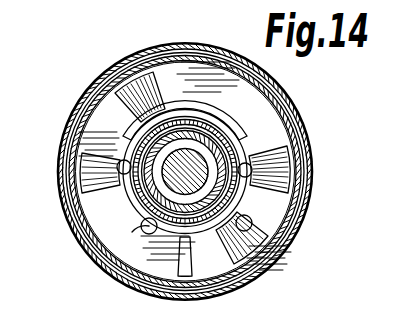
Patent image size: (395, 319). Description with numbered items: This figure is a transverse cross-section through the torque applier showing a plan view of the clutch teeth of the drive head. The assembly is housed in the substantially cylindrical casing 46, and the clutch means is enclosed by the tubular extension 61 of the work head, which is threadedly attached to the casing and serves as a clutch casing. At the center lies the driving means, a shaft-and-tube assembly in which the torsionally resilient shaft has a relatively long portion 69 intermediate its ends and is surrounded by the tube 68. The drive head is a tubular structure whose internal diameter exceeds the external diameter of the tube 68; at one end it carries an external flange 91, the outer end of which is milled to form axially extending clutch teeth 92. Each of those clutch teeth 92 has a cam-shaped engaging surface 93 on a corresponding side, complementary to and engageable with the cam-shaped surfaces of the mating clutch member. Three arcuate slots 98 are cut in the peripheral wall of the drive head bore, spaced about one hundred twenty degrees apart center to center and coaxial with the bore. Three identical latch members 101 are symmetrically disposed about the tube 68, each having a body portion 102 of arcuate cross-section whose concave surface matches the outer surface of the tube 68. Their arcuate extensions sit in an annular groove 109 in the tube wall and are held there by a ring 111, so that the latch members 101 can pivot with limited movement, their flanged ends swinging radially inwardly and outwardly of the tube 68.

The clutch teeth 92 is at (107, 78).
The tube 68 is at (100, 93).
The cam-shaped engaging surfaces 93 is at (110, 117).
The tubular extension 61 is at (150, 292).
The body portion 102 is at (112, 140).
The relatively long portion 69 is at (134, 230).
The arcuate slots 98 is at (123, 153).
The annular groove 109 is at (299, 183).
The latch members 101 is at (118, 210).
The ring 111 is at (128, 185).
The external flange 91 is at (289, 222).
The casing 46 is at (299, 206).